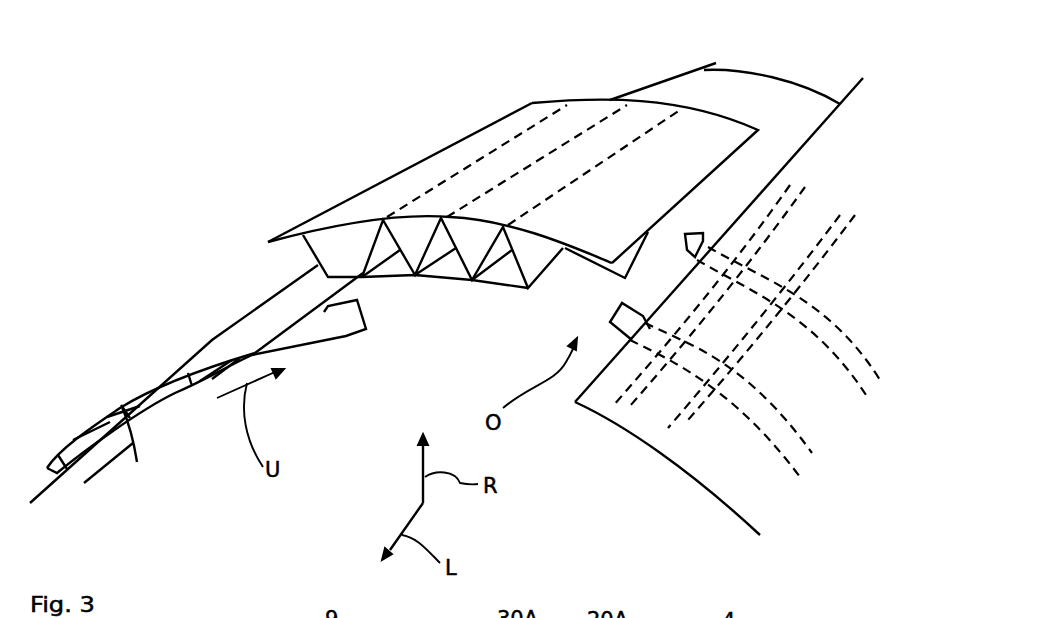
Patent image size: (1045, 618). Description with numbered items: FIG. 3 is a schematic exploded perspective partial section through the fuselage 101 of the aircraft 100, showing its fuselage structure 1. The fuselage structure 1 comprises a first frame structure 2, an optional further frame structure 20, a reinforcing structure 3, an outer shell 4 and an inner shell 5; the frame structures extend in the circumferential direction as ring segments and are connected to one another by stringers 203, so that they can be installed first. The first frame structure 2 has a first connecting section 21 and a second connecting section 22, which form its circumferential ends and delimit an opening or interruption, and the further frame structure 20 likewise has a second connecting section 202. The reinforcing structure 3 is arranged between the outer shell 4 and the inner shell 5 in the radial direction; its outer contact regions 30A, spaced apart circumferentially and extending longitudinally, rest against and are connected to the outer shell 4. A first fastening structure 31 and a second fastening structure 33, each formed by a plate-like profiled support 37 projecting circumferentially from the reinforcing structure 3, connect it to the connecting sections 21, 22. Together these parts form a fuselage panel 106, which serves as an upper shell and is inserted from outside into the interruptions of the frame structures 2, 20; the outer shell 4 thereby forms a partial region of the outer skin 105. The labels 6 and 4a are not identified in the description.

The aircraft 100 is at (143, 68).
The fuselage structure 1 is at (160, 210).
The fuselage 101 is at (107, 347).
The outer shell 4 is at (368, 204).
The fuselage panel 106 is at (479, 112).
The truss diagonal members 6 is at (428, 215).
The outer contact regions 30A is at (551, 108).
The first fastening structure 31 is at (322, 248).
The second fastening structure 33 is at (630, 260).
The profiled support 37 is at (421, 232).
The reinforcing structure 3 is at (430, 257).
The inner shell 5 is at (503, 283).
The first frame structure 2 is at (167, 404).
The first connecting section 21 is at (347, 340).
The stringers 203 is at (628, 406).
The second connecting section of the further frame structure 202 is at (703, 233).
The second frame structure 20 is at (835, 325).
The second connecting section 22 is at (614, 332).
The outer skin 105 is at (715, 493).
The panel portion 4a is at (562, 617).